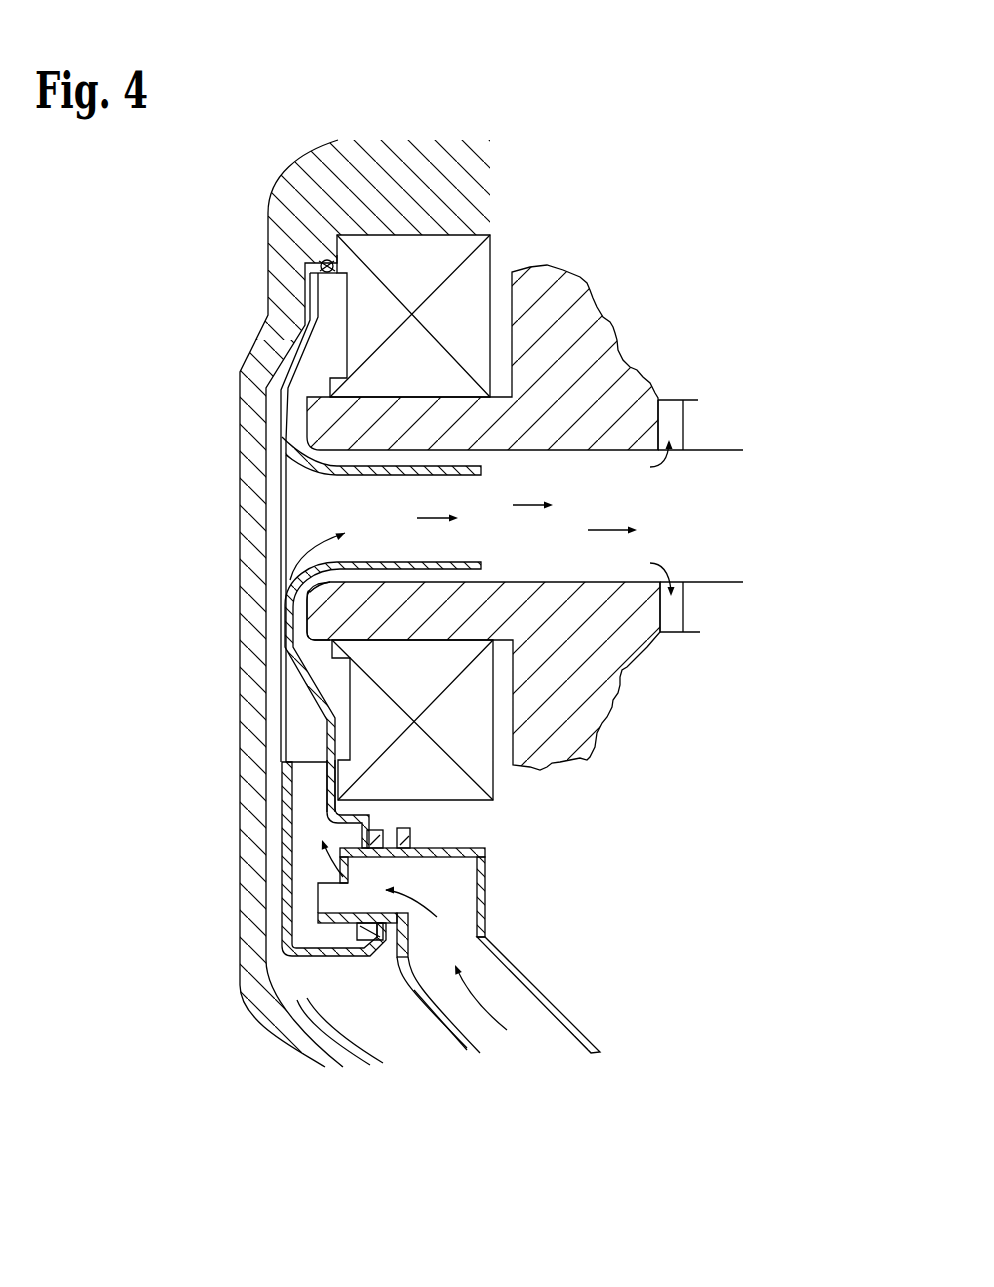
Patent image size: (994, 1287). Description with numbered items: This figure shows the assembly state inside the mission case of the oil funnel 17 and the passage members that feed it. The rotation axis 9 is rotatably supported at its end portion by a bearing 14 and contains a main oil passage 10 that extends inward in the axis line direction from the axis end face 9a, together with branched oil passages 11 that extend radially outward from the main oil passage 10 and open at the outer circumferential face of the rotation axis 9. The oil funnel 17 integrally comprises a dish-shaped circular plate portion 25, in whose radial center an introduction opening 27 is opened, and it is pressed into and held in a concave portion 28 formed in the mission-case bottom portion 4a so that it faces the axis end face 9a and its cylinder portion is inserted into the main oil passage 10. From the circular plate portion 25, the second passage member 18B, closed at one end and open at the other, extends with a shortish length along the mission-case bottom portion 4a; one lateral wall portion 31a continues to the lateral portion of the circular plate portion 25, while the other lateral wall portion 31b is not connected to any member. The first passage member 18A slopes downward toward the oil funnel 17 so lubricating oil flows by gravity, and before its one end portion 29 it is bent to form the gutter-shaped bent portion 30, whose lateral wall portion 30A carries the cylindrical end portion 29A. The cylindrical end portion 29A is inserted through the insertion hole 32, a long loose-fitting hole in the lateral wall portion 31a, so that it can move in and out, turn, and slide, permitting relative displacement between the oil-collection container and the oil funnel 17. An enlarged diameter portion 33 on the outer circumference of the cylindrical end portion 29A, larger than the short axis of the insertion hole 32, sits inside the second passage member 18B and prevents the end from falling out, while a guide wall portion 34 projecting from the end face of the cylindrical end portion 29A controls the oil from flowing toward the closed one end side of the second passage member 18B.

The mission-case bottom portion 4a is at (237, 440).
The bearing 14 is at (393, 250).
The concave portion 28 is at (330, 263).
The introduction opening 27 is at (283, 535).
The rotation axis 9 is at (428, 408).
The axis end face 9a is at (310, 622).
The branched oil passage 11 is at (677, 420).
The main oil passage 10 is at (752, 530).
The oil funnel 17 is at (334, 859).
The circular plate portion 25 is at (310, 697).
The second passage member 18B is at (308, 848).
The cylindrical end portion 29A is at (486, 861).
The one end portion 29 is at (388, 838).
The bent portion 30 is at (490, 897).
The chamber outlet 30A is at (410, 930).
The lateral wall portion 31a is at (330, 788).
The lateral wall portion 31b is at (328, 902).
The insertion hole 32 is at (378, 938).
The enlarged diameter portion 33 is at (295, 1005).
The guide wall portion 34 is at (352, 919).
The first passage member 18A is at (435, 1023).